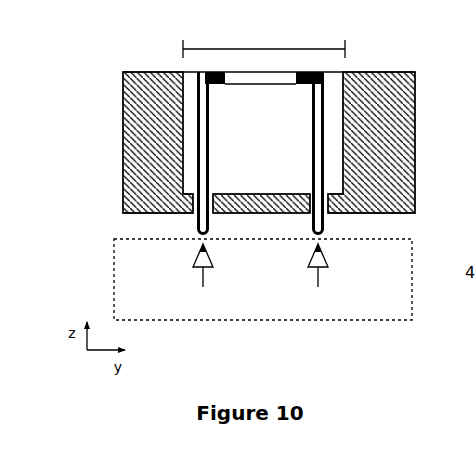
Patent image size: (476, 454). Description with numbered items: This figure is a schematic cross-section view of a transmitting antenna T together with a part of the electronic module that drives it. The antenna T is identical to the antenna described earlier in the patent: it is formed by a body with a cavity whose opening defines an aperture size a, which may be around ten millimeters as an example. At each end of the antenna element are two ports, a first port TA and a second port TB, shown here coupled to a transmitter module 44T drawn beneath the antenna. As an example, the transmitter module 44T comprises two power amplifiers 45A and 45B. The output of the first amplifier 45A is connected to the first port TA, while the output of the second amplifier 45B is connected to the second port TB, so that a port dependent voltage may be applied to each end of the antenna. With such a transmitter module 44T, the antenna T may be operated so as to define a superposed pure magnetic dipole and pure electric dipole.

The transmitting antenna T is at (124, 55).
The first port TA is at (193, 226).
The second port TB is at (328, 226).
The aperture size a is at (264, 44).
The transmitter module 44T is at (113, 262).
The first power amplifier 45A is at (196, 258).
The second power amplifier 45B is at (326, 258).